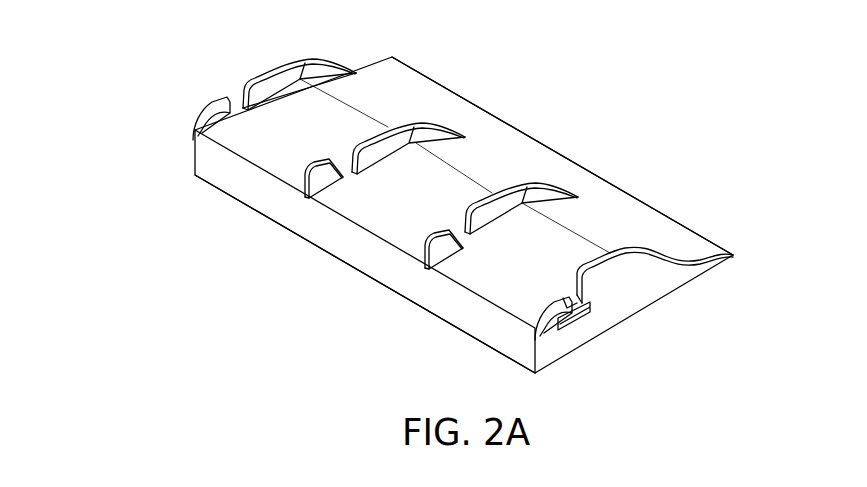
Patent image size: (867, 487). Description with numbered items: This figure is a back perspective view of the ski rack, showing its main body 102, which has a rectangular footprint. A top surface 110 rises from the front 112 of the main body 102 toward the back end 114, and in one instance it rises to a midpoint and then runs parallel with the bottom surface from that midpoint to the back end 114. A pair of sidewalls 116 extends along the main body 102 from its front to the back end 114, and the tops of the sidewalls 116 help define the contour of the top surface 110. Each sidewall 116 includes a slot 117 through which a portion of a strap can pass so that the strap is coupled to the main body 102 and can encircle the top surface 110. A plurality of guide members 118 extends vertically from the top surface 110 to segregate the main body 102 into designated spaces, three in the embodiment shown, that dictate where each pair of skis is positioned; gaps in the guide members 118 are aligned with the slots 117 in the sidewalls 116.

The main body 102 is at (368, 66).
The top surface 110 is at (507, 130).
The front 112 is at (648, 205).
The back end 114 is at (333, 235).
The sidewalls 116 is at (647, 282).
The slot 117 is at (584, 314).
The guide members 118 is at (253, 77).